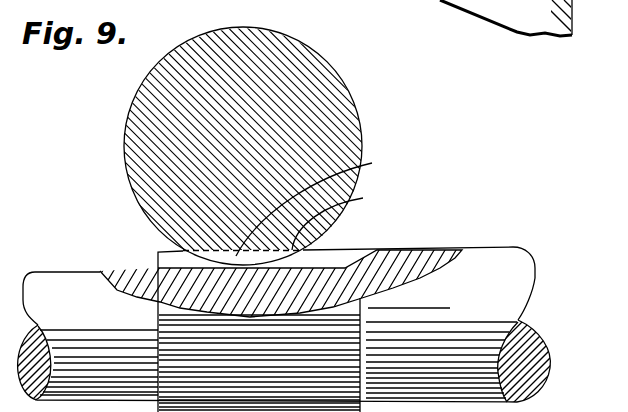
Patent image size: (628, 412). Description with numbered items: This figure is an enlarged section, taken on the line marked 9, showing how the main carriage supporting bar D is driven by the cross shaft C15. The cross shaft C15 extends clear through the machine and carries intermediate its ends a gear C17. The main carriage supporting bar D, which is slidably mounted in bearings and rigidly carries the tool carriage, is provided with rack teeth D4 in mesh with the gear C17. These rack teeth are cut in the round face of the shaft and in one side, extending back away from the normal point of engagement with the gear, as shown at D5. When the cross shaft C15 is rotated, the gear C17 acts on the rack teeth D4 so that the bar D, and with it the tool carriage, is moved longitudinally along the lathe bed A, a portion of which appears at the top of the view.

The main carriage supporting bar D is at (188, 152).
The rack teeth D4 is at (322, 202).
The extension of the rack teeth D5 is at (347, 217).
The cross shaft C15 is at (510, 285).
The gear C17 is at (178, 324).
The lathe bed A is at (527, 13).
The figure reference 9 is at (366, 0).